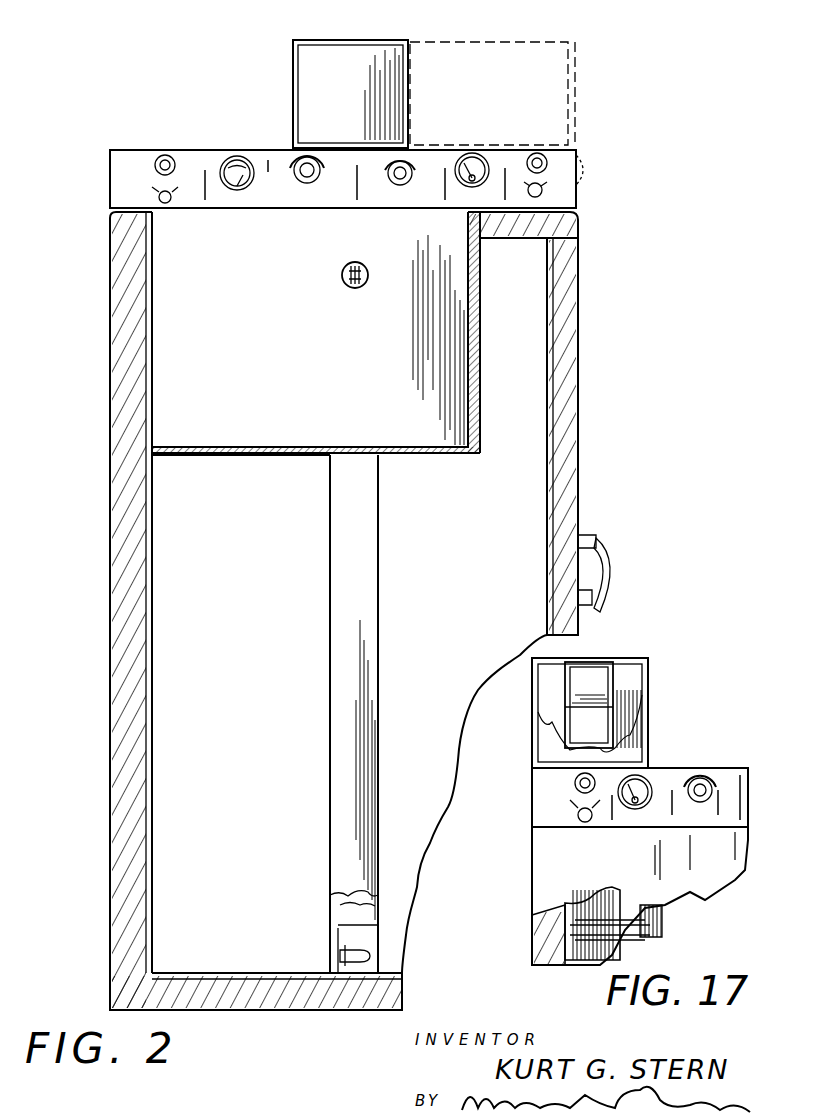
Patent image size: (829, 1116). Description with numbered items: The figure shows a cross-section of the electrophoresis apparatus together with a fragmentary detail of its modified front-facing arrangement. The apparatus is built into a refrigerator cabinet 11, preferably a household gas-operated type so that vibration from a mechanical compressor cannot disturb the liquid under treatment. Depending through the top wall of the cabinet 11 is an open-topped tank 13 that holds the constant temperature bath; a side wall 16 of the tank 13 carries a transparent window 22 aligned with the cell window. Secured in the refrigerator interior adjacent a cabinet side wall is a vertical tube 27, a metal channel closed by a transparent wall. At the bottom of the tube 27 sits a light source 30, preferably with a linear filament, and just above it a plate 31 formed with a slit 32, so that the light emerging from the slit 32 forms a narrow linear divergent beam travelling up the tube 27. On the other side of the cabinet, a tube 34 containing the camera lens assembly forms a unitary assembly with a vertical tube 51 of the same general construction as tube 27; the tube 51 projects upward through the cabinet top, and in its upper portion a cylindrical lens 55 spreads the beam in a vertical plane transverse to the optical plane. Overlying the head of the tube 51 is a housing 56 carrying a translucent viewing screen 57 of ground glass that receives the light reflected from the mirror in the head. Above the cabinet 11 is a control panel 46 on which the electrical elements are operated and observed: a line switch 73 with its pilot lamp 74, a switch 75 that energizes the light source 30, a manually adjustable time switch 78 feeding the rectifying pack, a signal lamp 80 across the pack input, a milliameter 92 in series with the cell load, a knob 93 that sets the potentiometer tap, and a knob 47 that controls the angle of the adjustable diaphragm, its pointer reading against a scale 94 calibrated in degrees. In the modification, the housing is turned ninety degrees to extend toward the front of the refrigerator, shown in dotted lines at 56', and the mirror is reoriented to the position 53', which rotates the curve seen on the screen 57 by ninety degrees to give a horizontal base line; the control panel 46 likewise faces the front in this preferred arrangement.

In FIG. 2, the refrigerator cabinet 11 is at (103, 429).
In FIG. 17, the refrigerator cabinet 11 is at (524, 909).
In FIG. 2, the tank 13 is at (440, 448).
In FIG. 2, the side wall 16 is at (229, 428).
In FIG. 2, the transparent window 22 is at (366, 283).
In FIG. 2, the vertical tube 27 is at (378, 550).
In FIG. 2, the light source 30 is at (355, 946).
In FIG. 2, the plate 31 is at (333, 915).
In FIG. 2, the slit 32 is at (357, 906).
In FIG. 17, the tube 34 is at (626, 900).
In FIG. 2, the control panel 46 is at (195, 162).
In FIG. 17, the control panel 46 is at (672, 776).
In FIG. 2, the knob 47 is at (406, 184).
In FIG. 17, the knob 47 is at (712, 777).
In FIG. 17, the vertical tube 51 is at (572, 948).
In FIG. 17, the reoriented mirror 53' is at (615, 681).
In FIG. 17, the cylindrical lens 55 is at (587, 950).
In FIG. 2, the housing 56 is at (318, 94).
In FIG. 2, the housing (modified position) 56' is at (492, 74).
In FIG. 17, the housing (modified position) 56' is at (613, 706).
In FIG. 2, the translucent viewing screen 57 is at (340, 55).
In FIG. 17, the translucent viewing screen 57 is at (548, 738).
In FIG. 2, the line switch 73 is at (171, 197).
In FIG. 2, the pilot lamp 74 is at (160, 158).
In FIG. 2, the switch 75 is at (548, 188).
In FIG. 17, the switch 75 is at (590, 822).
In FIG. 2, the time switch 78 is at (496, 162).
In FIG. 17, the time switch 78 is at (640, 778).
In FIG. 2, the signal lamp 80 is at (552, 163).
In FIG. 17, the signal lamp 80 is at (575, 783).
In FIG. 2, the milliameter 92 is at (250, 183).
In FIG. 2, the knob 93 is at (318, 180).
In FIG. 2, the scale 94 is at (412, 165).